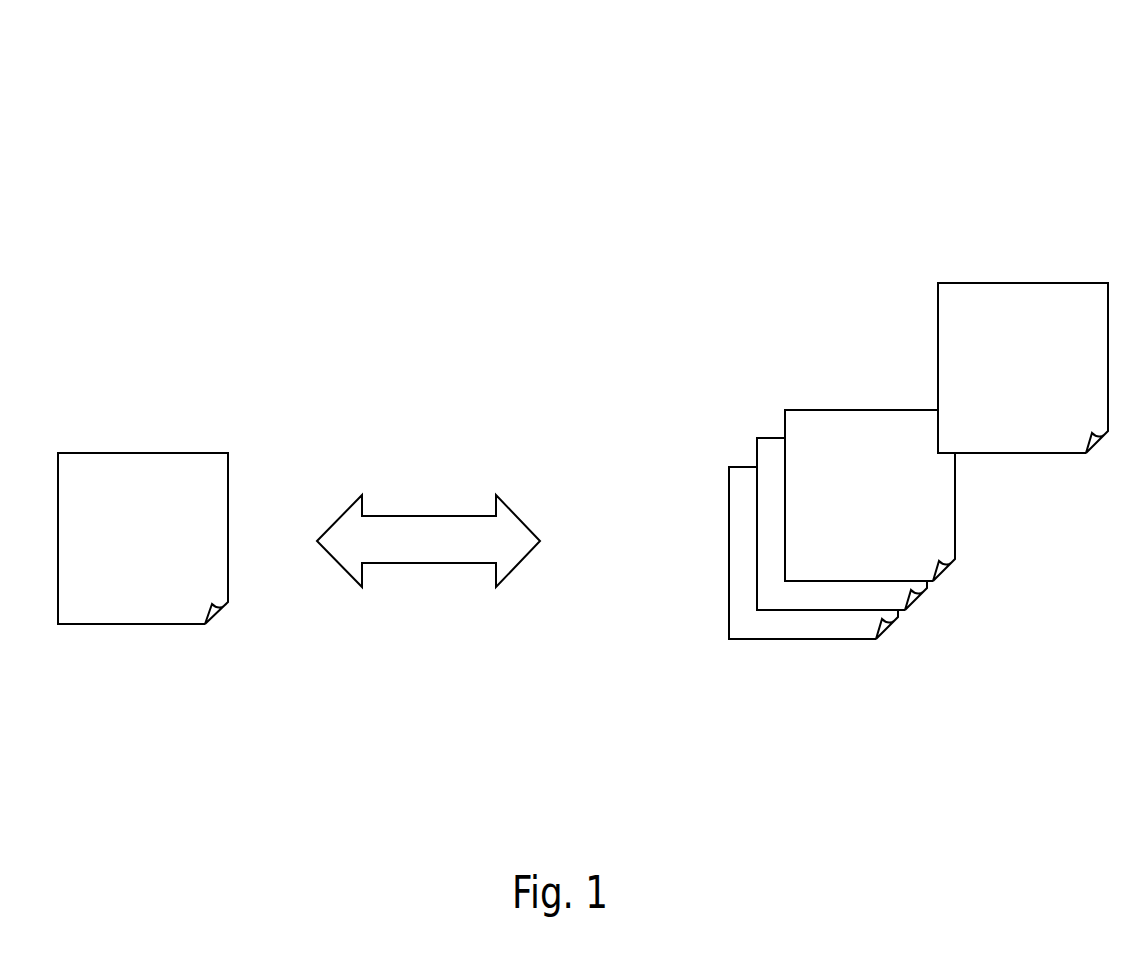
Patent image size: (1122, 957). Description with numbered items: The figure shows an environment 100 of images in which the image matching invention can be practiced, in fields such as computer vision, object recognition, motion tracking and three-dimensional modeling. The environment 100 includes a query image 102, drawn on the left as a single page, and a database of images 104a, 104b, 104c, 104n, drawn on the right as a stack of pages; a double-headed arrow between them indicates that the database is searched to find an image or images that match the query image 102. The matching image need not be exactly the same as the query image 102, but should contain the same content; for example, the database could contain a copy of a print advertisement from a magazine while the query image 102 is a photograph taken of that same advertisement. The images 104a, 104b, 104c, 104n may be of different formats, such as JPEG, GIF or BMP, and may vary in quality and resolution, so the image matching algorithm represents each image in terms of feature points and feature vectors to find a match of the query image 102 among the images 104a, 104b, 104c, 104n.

The environment 100 is at (171, 110).
The query image 102 is at (142, 453).
The database image 104a is at (1023, 283).
The database image 104b is at (868, 410).
The database image 104c is at (757, 438).
The database image 104n is at (729, 553).